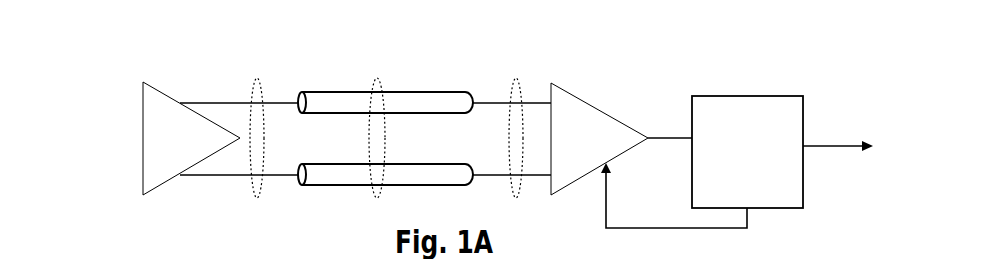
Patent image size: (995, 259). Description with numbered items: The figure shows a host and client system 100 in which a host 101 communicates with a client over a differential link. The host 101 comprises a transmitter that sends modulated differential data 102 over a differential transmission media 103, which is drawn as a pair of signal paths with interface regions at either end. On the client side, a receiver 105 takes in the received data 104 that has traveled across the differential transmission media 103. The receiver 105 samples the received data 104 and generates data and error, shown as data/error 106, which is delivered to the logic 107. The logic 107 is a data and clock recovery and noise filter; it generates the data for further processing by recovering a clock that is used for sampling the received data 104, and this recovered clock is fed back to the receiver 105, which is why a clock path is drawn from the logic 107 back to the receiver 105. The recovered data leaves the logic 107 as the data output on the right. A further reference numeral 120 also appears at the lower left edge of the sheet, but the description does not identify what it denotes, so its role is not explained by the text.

The host and client system 100 is at (54, 115).
The host 101 is at (157, 102).
The modulated differential data 102 is at (260, 96).
The differential transmission media 103 is at (380, 90).
The received data 104 is at (520, 92).
The receiver 105 is at (592, 118).
The data and error (data/error) 106 is at (662, 138).
The logic 107 is at (785, 107).
The reference numeral 120 (partially shown) 120 is at (51, 258).